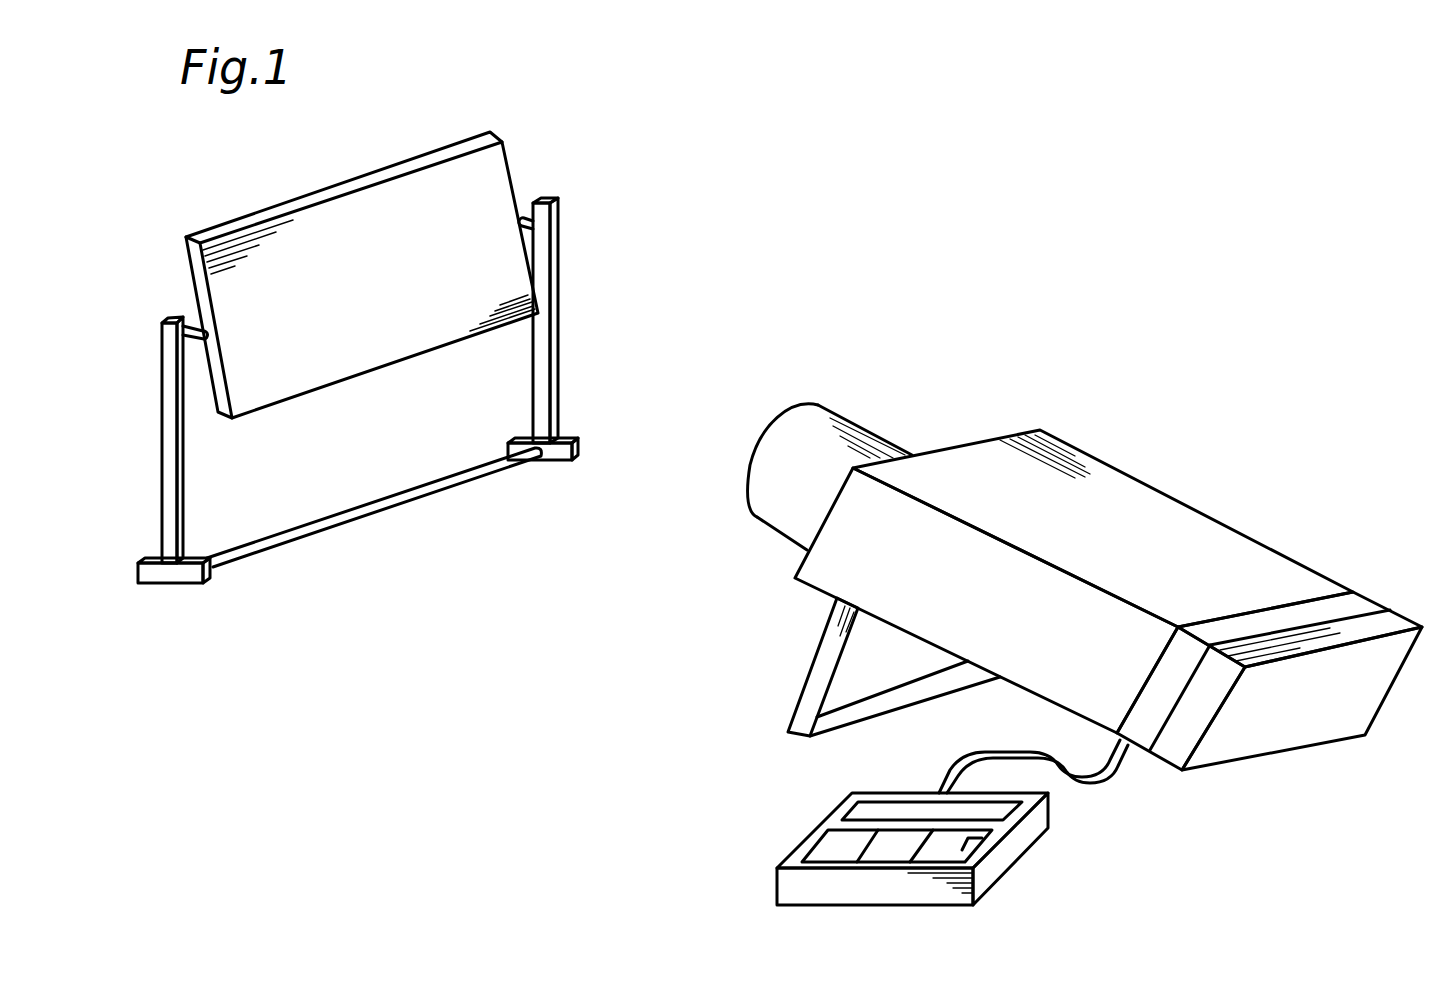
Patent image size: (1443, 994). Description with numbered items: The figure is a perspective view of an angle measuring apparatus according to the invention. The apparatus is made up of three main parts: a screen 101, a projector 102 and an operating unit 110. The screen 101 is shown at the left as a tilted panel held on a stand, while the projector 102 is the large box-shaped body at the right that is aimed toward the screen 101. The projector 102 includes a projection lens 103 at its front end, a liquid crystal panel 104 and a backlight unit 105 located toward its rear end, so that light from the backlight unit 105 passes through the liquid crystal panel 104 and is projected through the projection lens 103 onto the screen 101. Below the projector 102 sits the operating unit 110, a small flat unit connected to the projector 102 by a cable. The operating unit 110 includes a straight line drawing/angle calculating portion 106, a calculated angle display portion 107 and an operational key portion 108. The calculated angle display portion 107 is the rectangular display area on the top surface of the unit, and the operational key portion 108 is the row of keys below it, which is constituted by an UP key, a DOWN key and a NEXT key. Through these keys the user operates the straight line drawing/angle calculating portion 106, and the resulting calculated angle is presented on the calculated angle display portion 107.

The screen 101 is at (398, 193).
The projector 102 is at (1095, 524).
The projection lens 103 is at (806, 423).
The liquid crystal panel 104 is at (1363, 607).
The backlight unit 105 is at (1306, 698).
The straight line drawing/angle calculating portion 106 is at (977, 822).
The calculated angle display portion 107 is at (872, 816).
The operational key portion 108 is at (980, 835).
The operating unit 110 is at (924, 822).